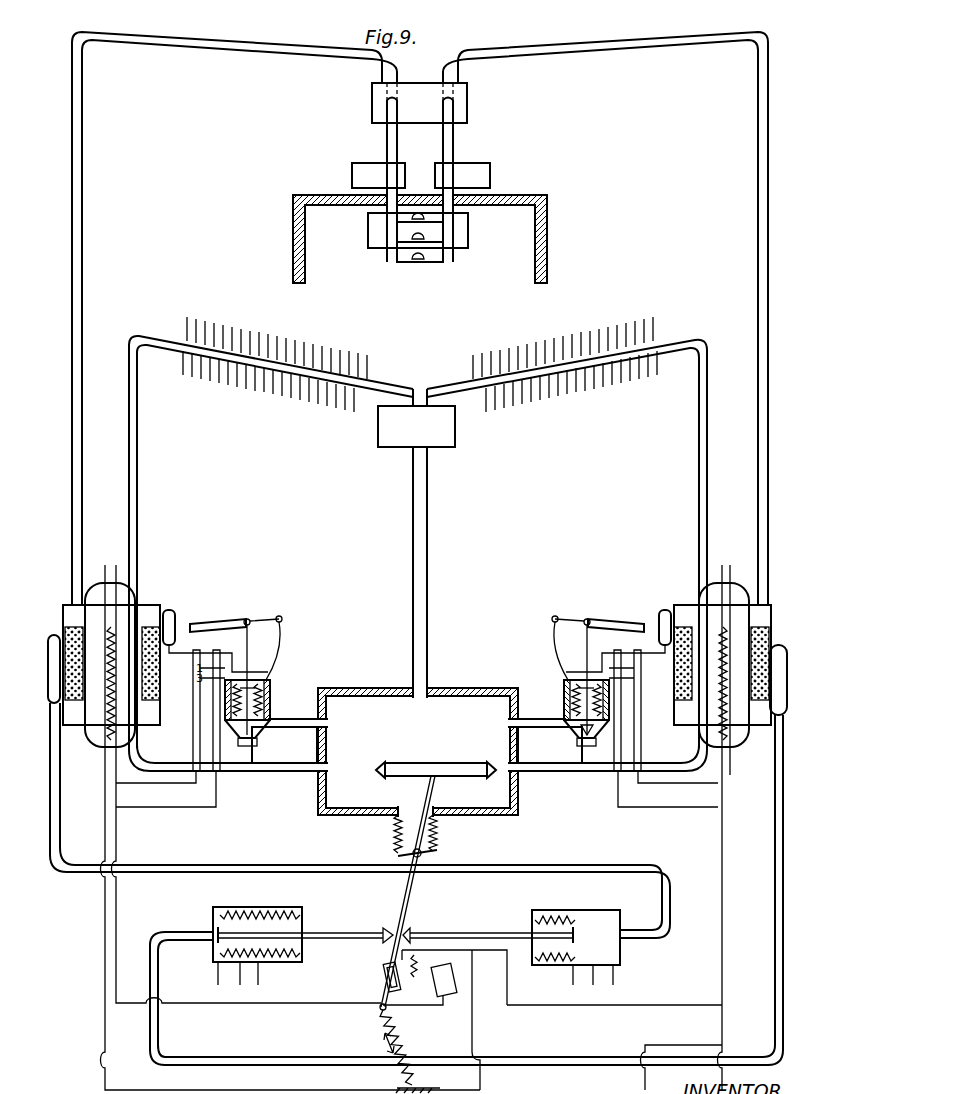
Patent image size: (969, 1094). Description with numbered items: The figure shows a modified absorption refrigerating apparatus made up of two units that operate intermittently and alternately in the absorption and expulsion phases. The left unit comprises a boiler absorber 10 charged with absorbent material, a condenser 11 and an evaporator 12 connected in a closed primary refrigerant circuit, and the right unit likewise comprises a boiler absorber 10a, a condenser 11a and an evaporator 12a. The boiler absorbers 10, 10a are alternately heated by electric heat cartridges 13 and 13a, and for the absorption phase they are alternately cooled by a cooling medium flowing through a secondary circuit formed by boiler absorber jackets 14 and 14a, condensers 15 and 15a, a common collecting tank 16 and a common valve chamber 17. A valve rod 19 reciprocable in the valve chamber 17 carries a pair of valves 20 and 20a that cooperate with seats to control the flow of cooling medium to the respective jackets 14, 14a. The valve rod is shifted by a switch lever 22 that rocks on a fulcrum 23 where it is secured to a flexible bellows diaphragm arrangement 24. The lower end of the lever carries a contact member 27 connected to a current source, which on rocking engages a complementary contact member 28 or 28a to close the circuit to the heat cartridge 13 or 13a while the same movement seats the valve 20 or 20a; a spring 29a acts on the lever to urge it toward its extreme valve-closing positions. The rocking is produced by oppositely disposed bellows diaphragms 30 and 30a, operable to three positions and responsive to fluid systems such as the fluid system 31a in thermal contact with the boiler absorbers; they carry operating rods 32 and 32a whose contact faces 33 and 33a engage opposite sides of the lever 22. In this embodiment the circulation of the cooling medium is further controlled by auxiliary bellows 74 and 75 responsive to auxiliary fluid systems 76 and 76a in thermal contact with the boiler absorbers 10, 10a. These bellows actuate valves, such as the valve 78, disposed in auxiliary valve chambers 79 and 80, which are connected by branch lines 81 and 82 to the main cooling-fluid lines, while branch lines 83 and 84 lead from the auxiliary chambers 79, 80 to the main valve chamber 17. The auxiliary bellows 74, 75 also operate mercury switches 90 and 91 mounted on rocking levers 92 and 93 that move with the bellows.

The boiler absorber 10 is at (152, 705).
The boiler absorber 10a is at (682, 698).
The condenser 11 is at (382, 103).
The condenser 11a is at (458, 103).
The evaporator 12 is at (352, 176).
The evaporator 12a is at (490, 175).
The electric heat cartridge 13 is at (112, 627).
The electric heat cartridge 13a is at (716, 740).
The boiler absorber jacket 14 is at (271, 827).
The boiler absorber jacket 14a is at (639, 827).
The condenser 15 is at (276, 340).
The condenser 15a is at (588, 340).
The common collecting tank 16 is at (455, 428).
The common valve chamber 17 is at (459, 688).
The valve rod 19 is at (416, 764).
The valve 20 is at (378, 768).
The valve 20a is at (490, 768).
The switch lever 22 is at (410, 893).
The fulcrum 23 is at (412, 855).
The flexible bellows diaphragm arrangement 24 is at (440, 836).
The contact member 27 is at (386, 968).
The complementary contact member 28 is at (435, 985).
The complementary contact member 28a is at (380, 1000).
The spring 29a is at (402, 1033).
The bellows diaphragm 30 is at (50, 635).
The bellows diaphragm 30a is at (213, 920).
The fluid system 31a is at (798, 642).
The operating rod 32 is at (478, 933).
The operating rod 32a is at (333, 932).
The contact face 33 is at (408, 930).
The contact face 33a is at (382, 928).
The auxiliary bellows 74 is at (267, 678).
The auxiliary bellows 75 is at (566, 680).
The auxiliary fluid system 76 is at (176, 615).
The auxiliary fluid system 76a is at (662, 614).
The valve 78 is at (590, 738).
The valve chamber 79 is at (272, 690).
The valve chamber 80 is at (565, 700).
The branch line 81 is at (256, 748).
The branch line 82 is at (580, 758).
The branch line 83 is at (287, 713).
The branch line 84 is at (556, 720).
The mercury switch 90 is at (234, 620).
The mercury switch 91 is at (620, 610).
The rocking lever 92 is at (268, 618).
The rocking lever 93 is at (580, 612).